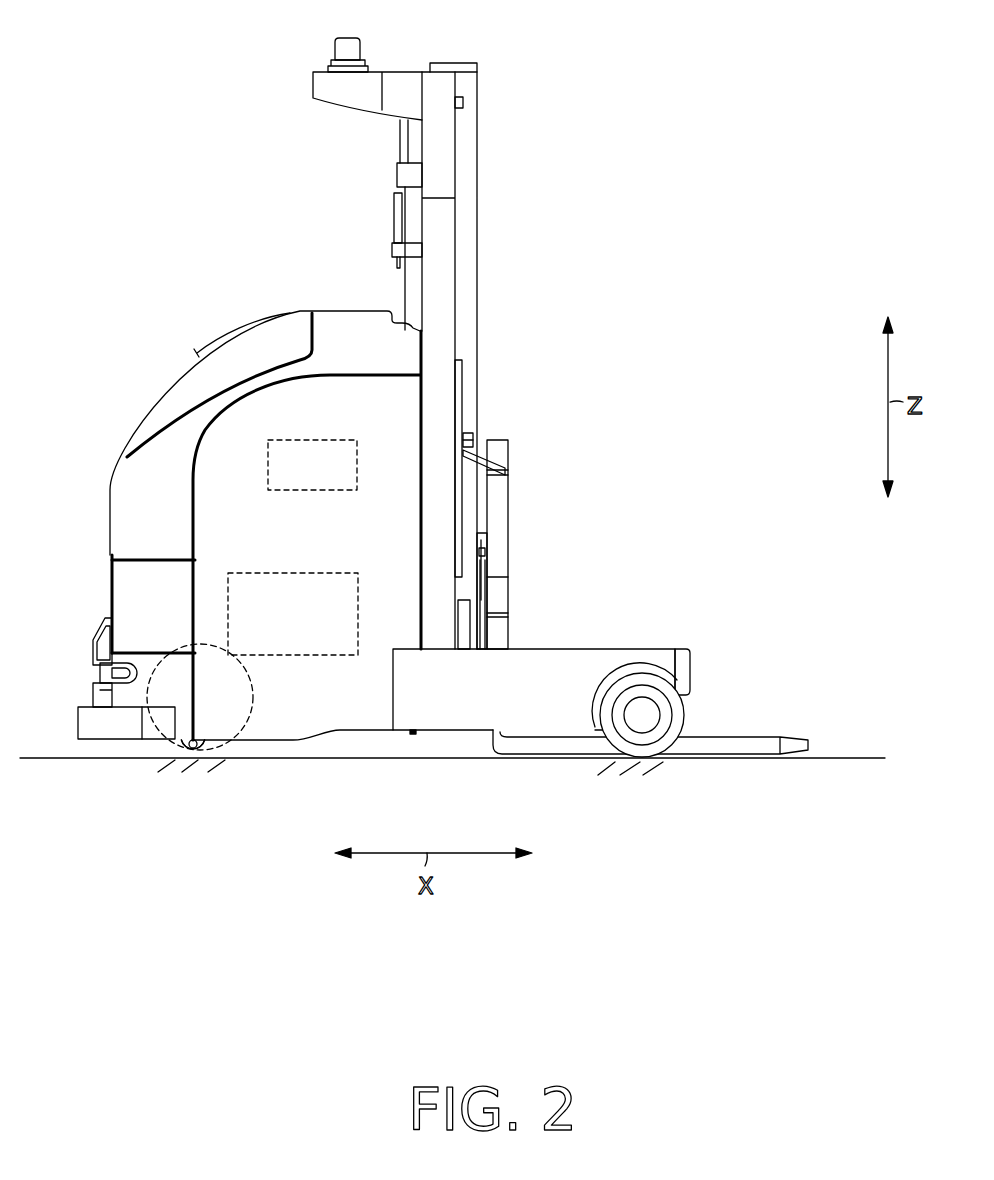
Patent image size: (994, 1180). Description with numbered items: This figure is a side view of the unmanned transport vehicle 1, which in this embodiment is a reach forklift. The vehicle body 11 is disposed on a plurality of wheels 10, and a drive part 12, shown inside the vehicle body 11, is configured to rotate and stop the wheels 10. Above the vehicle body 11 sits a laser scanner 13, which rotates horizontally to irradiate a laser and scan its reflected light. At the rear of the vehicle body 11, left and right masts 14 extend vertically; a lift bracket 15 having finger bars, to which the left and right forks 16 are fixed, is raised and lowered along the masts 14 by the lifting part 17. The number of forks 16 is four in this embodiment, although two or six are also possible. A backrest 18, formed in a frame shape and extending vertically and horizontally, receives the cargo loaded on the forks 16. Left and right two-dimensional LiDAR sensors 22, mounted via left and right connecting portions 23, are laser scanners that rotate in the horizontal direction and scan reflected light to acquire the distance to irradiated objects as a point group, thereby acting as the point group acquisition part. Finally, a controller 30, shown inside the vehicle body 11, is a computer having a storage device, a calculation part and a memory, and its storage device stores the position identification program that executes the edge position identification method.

The transport vehicle 1 is at (762, 160).
The wheels 10 is at (232, 740).
The vehicle body 11 is at (160, 470).
The drive part 12 is at (287, 605).
The laser scanner 13 is at (333, 48).
The masts 14 is at (463, 277).
The lift bracket 15 is at (480, 567).
The forks 16 is at (750, 743).
The lifting part 17 is at (412, 285).
The backrest 18 is at (495, 503).
The two-dimensional LiDAR sensors 22 is at (473, 433).
The connecting portions 23 is at (483, 462).
The controller 30 is at (303, 455).